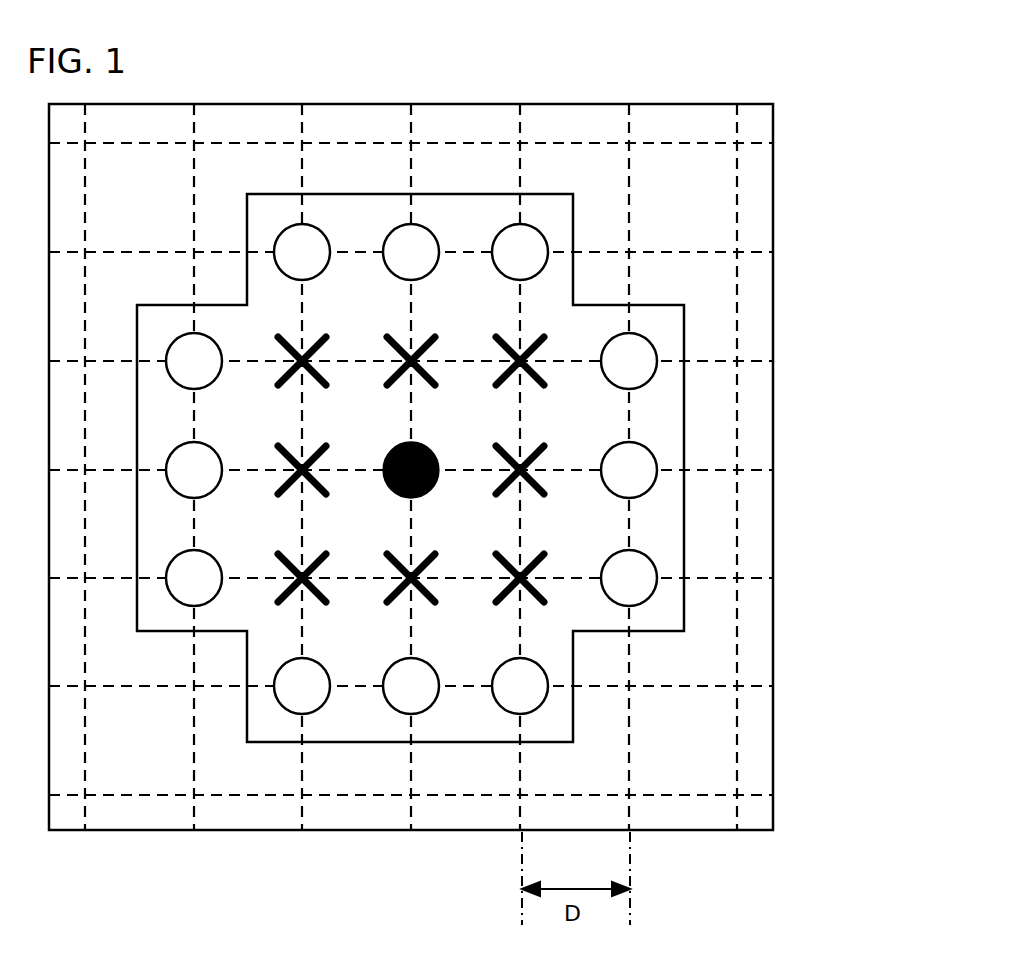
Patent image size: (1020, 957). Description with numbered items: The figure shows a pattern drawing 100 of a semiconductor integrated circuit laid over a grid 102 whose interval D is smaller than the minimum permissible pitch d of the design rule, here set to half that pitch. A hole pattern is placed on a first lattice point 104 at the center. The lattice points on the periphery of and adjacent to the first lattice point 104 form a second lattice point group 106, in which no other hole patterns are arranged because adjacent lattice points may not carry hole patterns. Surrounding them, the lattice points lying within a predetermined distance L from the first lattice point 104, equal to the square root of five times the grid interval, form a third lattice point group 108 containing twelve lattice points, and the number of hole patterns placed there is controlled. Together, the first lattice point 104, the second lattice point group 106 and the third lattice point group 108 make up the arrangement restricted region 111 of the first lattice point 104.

The pattern drawing 100 is at (773, 502).
The grid 102 is at (738, 730).
The first lattice point 104 is at (433, 450).
The second lattice point group 106 is at (538, 455).
The third lattice point group 108 is at (652, 345).
The arrangement restricted region 111 is at (573, 229).